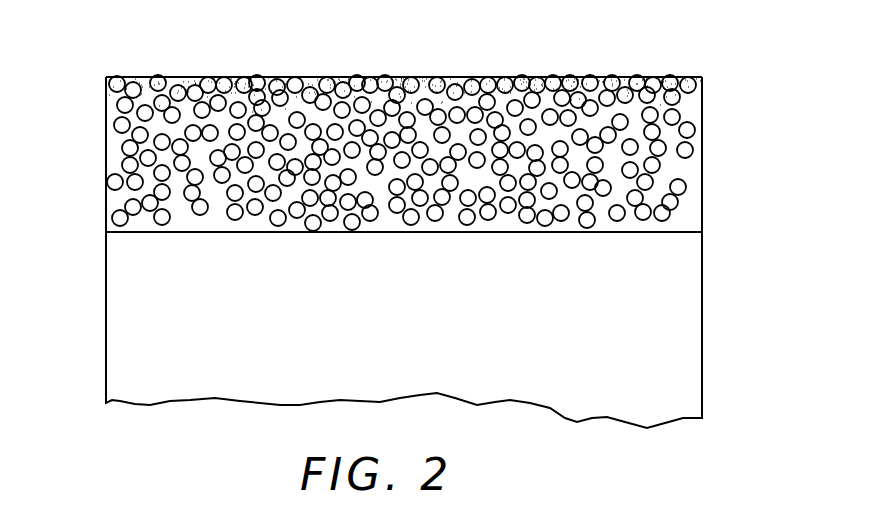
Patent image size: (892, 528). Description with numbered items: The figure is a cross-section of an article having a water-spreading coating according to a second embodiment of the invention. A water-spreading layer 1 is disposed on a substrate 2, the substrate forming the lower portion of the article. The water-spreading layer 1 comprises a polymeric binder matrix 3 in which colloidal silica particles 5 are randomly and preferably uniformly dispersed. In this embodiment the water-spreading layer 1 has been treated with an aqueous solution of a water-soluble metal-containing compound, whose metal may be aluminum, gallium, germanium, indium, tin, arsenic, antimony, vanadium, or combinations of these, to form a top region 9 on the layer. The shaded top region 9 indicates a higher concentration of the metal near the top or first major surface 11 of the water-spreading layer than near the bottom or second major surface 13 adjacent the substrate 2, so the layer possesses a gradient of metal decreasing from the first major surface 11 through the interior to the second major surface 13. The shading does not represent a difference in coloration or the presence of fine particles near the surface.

The water-spreading layer 1 is at (401, 225).
The substrate 2 is at (677, 333).
The polymeric binder matrix 3 is at (421, 155).
The colloidal silica particles 5 is at (702, 135).
The top region 9 is at (705, 78).
The first major surface 11 is at (602, 76).
The second major surface 13 is at (602, 233).